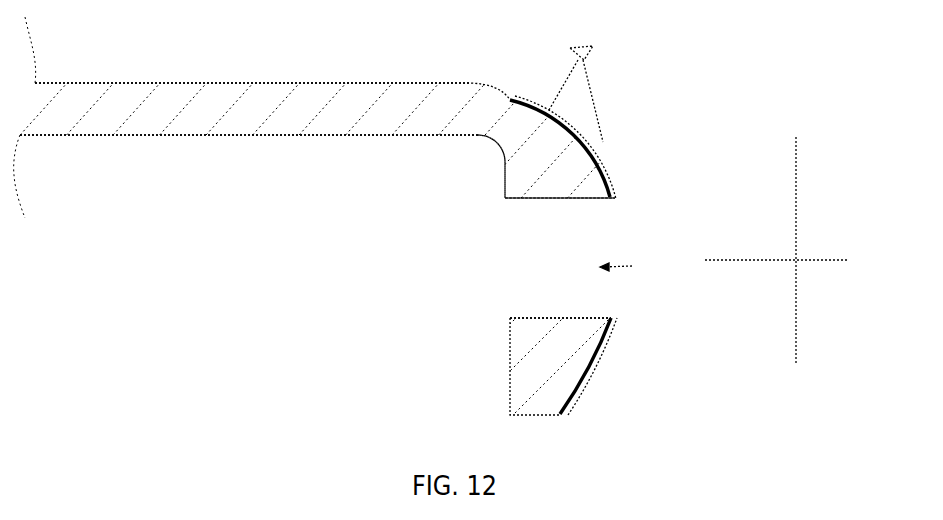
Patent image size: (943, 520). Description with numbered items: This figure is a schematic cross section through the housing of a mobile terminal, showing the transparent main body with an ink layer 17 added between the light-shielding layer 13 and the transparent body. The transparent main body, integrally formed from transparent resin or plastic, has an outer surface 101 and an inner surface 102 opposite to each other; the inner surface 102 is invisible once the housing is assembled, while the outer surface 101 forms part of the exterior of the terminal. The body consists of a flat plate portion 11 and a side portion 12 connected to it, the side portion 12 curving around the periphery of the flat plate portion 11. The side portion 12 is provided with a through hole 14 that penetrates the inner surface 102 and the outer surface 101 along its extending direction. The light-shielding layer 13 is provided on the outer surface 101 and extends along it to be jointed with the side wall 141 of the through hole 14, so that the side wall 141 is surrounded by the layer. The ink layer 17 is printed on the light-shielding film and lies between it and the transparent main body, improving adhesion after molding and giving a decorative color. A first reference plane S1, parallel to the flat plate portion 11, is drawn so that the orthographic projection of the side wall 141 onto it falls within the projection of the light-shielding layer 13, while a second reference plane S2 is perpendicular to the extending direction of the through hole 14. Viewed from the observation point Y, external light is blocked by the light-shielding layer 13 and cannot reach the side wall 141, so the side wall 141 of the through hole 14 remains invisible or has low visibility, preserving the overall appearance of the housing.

The flat plate portion 11 is at (120, 106).
The outer surface 101 is at (330, 82).
The inner surface 102 is at (278, 137).
The side portion 12 is at (538, 199).
The light-shielding layer 13 is at (599, 148).
The ink layer 17 is at (611, 191).
The side wall 141 is at (569, 201).
The through hole 14 is at (630, 265).
The observation point Y is at (593, 46).
The first reference plane S1 is at (847, 260).
The second reference plane S2 is at (793, 187).